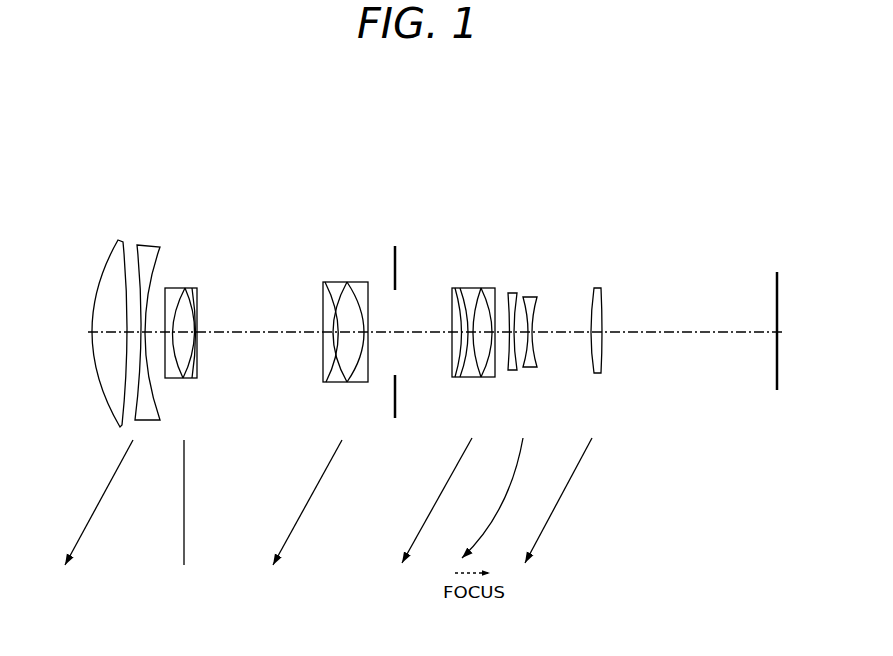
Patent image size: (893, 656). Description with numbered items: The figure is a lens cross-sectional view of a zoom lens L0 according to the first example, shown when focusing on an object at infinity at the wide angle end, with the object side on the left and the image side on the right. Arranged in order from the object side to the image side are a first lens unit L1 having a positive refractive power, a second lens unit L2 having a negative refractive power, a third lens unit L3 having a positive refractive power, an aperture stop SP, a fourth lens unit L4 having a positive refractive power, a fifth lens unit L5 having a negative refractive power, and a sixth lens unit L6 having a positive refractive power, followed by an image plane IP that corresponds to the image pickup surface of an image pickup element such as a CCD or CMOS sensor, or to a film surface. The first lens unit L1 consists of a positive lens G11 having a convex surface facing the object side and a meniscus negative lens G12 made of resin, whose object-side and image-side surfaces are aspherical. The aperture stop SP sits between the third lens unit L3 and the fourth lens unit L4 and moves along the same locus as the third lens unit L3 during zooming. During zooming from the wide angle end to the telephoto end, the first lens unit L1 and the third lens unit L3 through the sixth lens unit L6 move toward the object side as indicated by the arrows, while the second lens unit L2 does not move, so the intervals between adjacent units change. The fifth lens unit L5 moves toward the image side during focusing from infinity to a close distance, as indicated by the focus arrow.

The zoom lens L0 is at (610, 130).
The first lens unit L1 is at (162, 176).
The second lens unit L2 is at (218, 192).
The third lens unit L3 is at (397, 187).
The fourth lens unit L4 is at (497, 191).
The fifth lens unit L5 is at (547, 191).
The sixth lens unit L6 is at (612, 191).
The positive lens G11 is at (117, 238).
The meniscus negative lens G12 is at (148, 243).
The aperture stop SP is at (400, 248).
The image plane IP is at (772, 276).